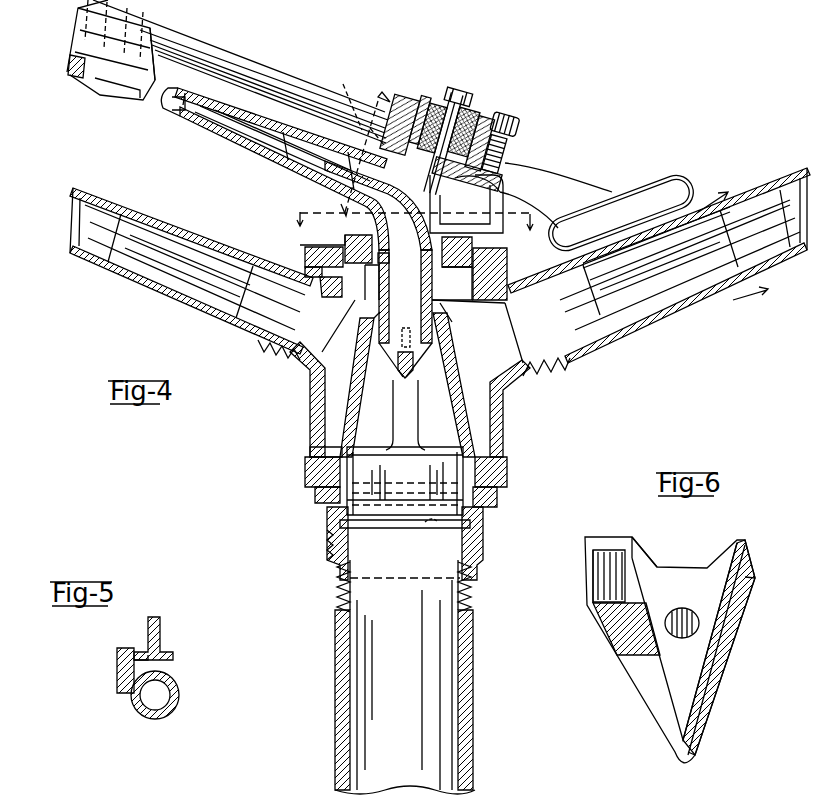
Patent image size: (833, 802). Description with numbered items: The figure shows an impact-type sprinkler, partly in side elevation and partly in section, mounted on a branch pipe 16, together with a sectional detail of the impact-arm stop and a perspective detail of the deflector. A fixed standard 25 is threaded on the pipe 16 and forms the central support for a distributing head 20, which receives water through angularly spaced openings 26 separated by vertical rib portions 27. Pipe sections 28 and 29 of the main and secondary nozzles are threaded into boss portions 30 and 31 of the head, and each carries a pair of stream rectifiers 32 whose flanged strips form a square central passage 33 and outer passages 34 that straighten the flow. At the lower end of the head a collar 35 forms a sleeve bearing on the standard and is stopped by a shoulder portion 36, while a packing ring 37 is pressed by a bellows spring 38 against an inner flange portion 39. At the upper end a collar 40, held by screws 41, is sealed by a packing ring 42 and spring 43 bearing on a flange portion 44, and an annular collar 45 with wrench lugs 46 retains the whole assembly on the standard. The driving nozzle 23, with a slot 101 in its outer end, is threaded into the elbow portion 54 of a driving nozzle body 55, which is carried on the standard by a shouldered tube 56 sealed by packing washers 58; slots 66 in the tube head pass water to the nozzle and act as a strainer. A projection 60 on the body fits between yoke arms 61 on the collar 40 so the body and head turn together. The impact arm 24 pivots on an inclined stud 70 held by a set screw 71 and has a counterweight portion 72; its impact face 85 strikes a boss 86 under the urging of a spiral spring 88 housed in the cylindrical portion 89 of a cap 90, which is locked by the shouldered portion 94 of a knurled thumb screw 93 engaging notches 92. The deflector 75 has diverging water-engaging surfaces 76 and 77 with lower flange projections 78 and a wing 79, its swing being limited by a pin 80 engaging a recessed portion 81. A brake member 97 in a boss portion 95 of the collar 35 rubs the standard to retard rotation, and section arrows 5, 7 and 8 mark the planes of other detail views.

In FIG. 4, the branch pipe 16 is at (474, 654).
In FIG. 4, the distributing head 20 is at (505, 402).
In FIG. 4, the driving nozzle 23 is at (195, 90).
In FIG. 4, the impact arm 24 is at (278, 84).
In FIG. 5, the impact arm 24 is at (162, 640).
In FIG. 4, the standard 25 is at (456, 333).
In FIG. 4, the openings 26 is at (428, 440).
In FIG. 4, the rib portions 27 is at (350, 397).
In FIG. 4, the pipe section 28 is at (690, 300).
In FIG. 4, the pipe section 29 is at (132, 292).
In FIG. 4, the boss portion 30 is at (550, 369).
In FIG. 4, the boss portion 31 is at (264, 353).
In FIG. 4, the stream rectifiers 32 is at (72, 200).
In FIG. 4, the square central passage 33 is at (615, 300).
In FIG. 4, the outer passages 34 is at (716, 283).
In FIG. 4, the collar 35 is at (316, 498).
In FIG. 4, the shoulder portion 36 is at (325, 527).
In FIG. 4, the packing ring 37 is at (500, 500).
In FIG. 4, the spring 38 is at (303, 473).
In FIG. 4, the inner flange portion 39 is at (310, 450).
In FIG. 4, the collar 40 is at (508, 255).
In FIG. 4, the screws 41 is at (310, 246).
In FIG. 4, the packing ring 42 is at (305, 252).
In FIG. 4, the spring 43 is at (305, 271).
In FIG. 4, the flange portion 44 is at (330, 300).
In FIG. 4, the annular collar 45 is at (350, 236).
In FIG. 4, the lugs 46 is at (454, 269).
In FIG. 4, the elbow portion 54 is at (270, 168).
In FIG. 5, the elbow portion 54 is at (175, 712).
In FIG. 4, the driving nozzle body 55 is at (402, 188).
In FIG. 4, the shouldered tube 56 is at (454, 308).
In FIG. 4, the packing washers 58 is at (373, 276).
In FIG. 4, the projection 60 is at (495, 175).
In FIG. 4, the yoke arms 61 is at (545, 188).
In FIG. 4, the slots 66 is at (390, 356).
In FIG. 4, the stud 70 is at (466, 90).
In FIG. 4, the set screw 71 is at (466, 204).
In FIG. 4, the counterweight portion 72 is at (685, 176).
In FIG. 4, the deflector 75 is at (132, 100).
In FIG. 6, the deflector 75 is at (685, 573).
In FIG. 6, the water engaging surface 76 is at (725, 628).
In FIG. 4, the water engaging surface 77 is at (128, 92).
In FIG. 6, the water engaging surface 77 is at (662, 668).
In FIG. 6, the flange projection 78 is at (745, 598).
In FIG. 4, the extension portion 79 is at (82, 82).
In FIG. 6, the extension portion 79 is at (607, 584).
In FIG. 4, the pin 80 is at (75, 42).
In FIG. 6, the recessed portion 81 is at (665, 565).
In FIG. 5, the impact face portion 85 is at (142, 655).
In FIG. 4, the boss 86 is at (356, 104).
In FIG. 5, the boss 86 is at (116, 657).
In FIG. 4, the spiral spring 88 is at (449, 95).
In FIG. 4, the cylindrical portion 89 is at (396, 105).
In FIG. 4, the cap 90 is at (490, 118).
In FIG. 4, the arcuate notches 92 is at (414, 98).
In FIG. 4, the thumb screw 93 is at (516, 122).
In FIG. 4, the shouldered portion 94 is at (508, 152).
In FIG. 4, the boss portion 95 is at (486, 532).
In FIG. 4, the brake member 97 is at (428, 527).
In FIG. 4, the slot 101 is at (178, 112).
In FIG. 4, the section line 5— 5 is at (358, 151).
In FIG. 4, the section line 7 is at (415, 213).
In FIG. 4, the section line 8 is at (736, 237).